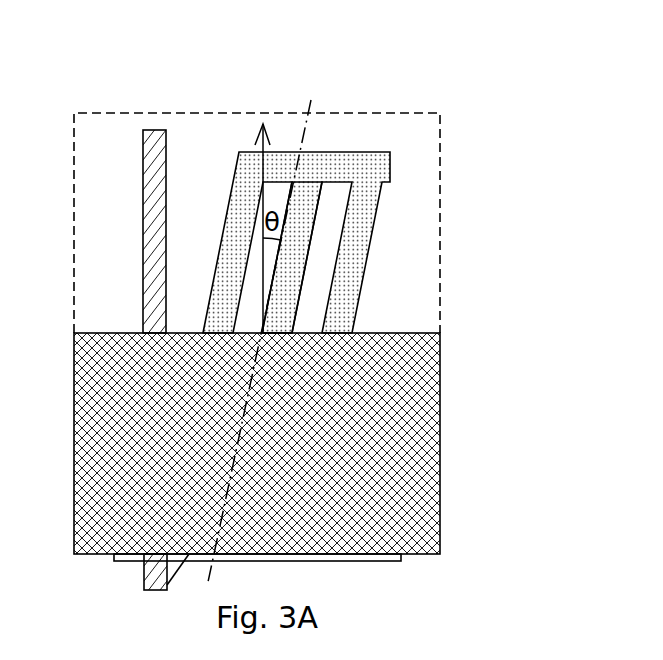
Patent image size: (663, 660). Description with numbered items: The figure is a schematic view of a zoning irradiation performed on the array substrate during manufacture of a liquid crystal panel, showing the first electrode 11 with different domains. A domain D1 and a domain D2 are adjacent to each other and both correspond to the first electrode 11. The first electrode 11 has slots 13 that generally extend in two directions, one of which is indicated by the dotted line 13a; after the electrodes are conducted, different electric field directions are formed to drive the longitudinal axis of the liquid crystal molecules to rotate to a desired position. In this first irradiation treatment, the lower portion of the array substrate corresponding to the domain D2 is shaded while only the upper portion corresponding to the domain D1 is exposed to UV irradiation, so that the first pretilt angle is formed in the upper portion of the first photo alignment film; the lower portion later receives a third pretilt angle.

The first electrode 11 is at (348, 200).
The slots 13 is at (340, 200).
The dotted line 13a is at (311, 100).
The domain D1 is at (433, 243).
The domain D2 is at (427, 407).